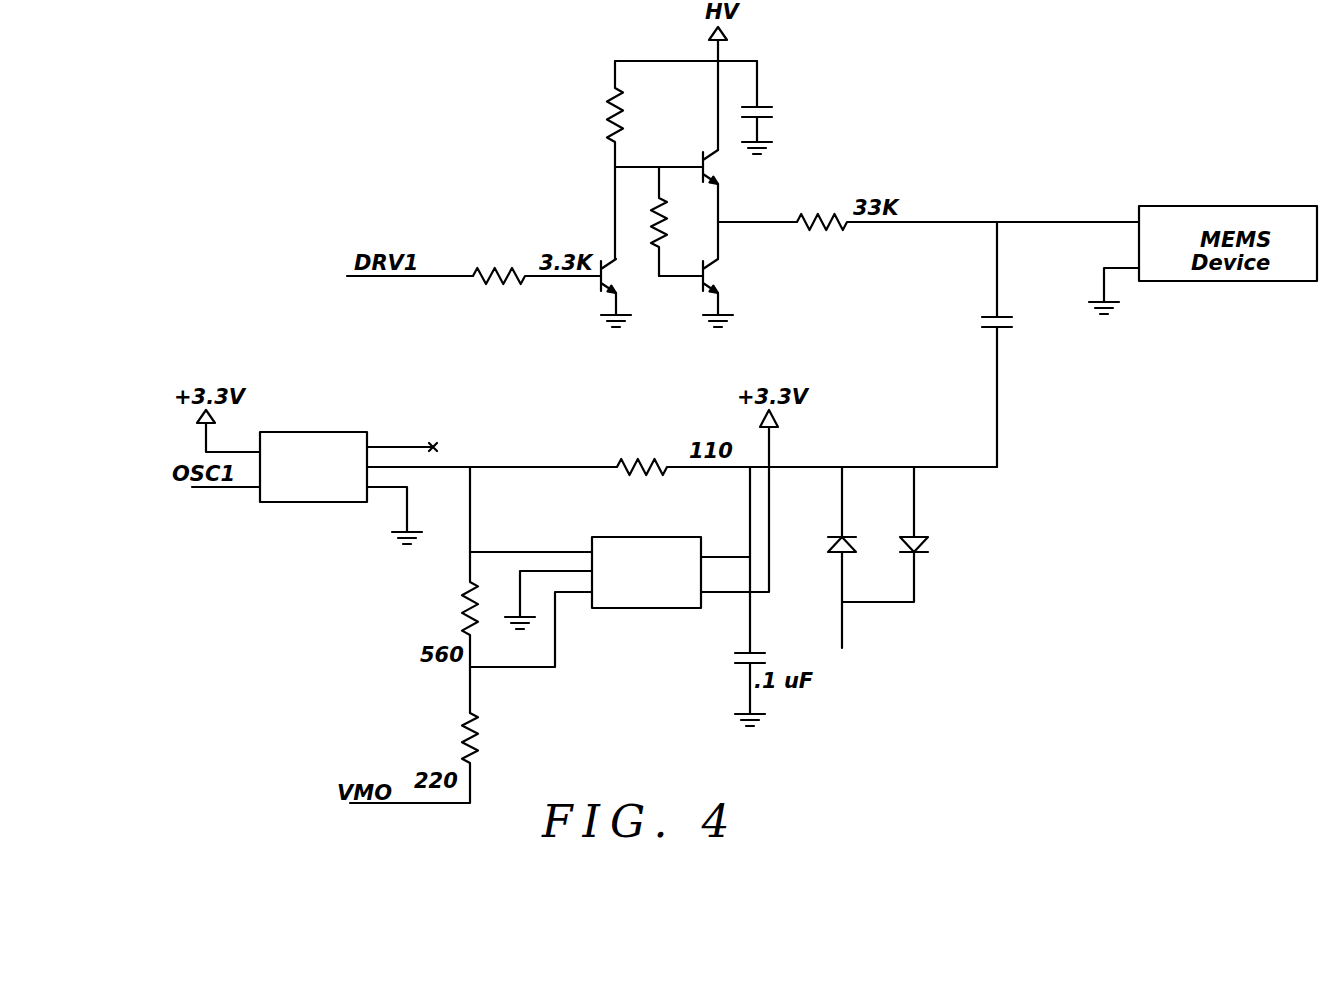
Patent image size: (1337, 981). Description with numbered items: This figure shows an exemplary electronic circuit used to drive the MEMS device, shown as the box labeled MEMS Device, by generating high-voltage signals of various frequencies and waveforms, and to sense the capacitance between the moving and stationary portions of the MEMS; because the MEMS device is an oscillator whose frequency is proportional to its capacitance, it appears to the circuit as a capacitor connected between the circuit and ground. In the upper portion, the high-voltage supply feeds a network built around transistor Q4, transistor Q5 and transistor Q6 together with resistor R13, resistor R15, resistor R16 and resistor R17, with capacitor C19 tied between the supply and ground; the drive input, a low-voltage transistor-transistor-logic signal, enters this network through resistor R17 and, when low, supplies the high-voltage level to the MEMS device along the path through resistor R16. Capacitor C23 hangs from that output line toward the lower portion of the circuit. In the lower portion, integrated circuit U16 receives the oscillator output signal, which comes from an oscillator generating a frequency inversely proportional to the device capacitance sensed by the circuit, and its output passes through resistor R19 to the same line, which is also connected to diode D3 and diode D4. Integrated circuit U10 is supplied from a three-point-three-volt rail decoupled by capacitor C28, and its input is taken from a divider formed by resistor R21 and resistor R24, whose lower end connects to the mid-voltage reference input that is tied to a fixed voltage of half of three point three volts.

The resistor R13 is at (637, 160).
The capacitor C19 is at (775, 107).
The transistor Q4 is at (681, 204).
The resistor R15 is at (680, 221).
The resistor R16 (33K) R16 is at (928, 213).
The transistor Q5 is at (619, 293).
The transistor Q6 is at (703, 293).
The resistor R17 (3.3K) R17 is at (474, 267).
The capacitor C23 is at (1016, 344).
The inverter SN74LVC1004 U16 is at (334, 476).
The resistor R19 (110) R19 is at (682, 457).
The resistor R21 (560) R21 is at (448, 590).
The resistor R24 (220) R24 is at (414, 758).
The comparator ADCMP600 U10 is at (610, 589).
The capacitor C28 (.1 uF) C28 is at (768, 596).
The diode D3 is at (831, 557).
The diode D4 is at (901, 534).